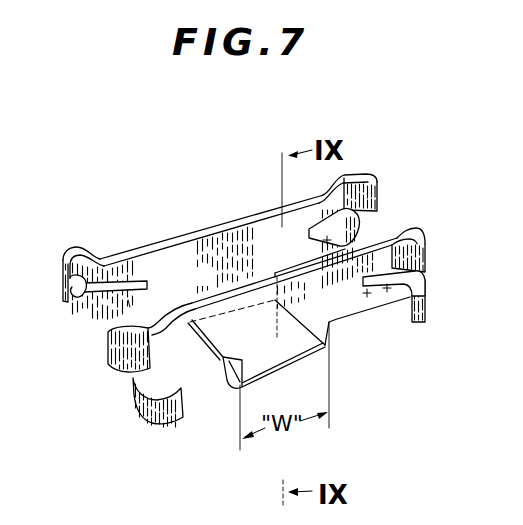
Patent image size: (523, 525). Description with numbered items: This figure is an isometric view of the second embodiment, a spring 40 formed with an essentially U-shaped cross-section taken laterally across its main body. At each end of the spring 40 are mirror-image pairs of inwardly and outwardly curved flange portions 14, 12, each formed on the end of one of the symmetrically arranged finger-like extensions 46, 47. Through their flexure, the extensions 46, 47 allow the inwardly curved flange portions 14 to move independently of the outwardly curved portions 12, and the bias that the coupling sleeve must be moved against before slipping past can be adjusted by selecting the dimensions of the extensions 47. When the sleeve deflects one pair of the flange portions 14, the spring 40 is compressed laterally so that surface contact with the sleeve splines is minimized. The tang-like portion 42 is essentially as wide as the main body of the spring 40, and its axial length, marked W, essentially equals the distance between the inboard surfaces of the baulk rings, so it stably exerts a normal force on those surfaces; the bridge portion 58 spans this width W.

The spring 40 is at (262, 315).
The tang-like portion 42 is at (297, 368).
The inwardly curved flange portion 14 is at (377, 190).
The outwardly curved flange portion 12 is at (358, 224).
The finger-like extension 46 is at (123, 270).
The finger-like extension 47 is at (128, 307).
The bridge portion 58 is at (230, 390).